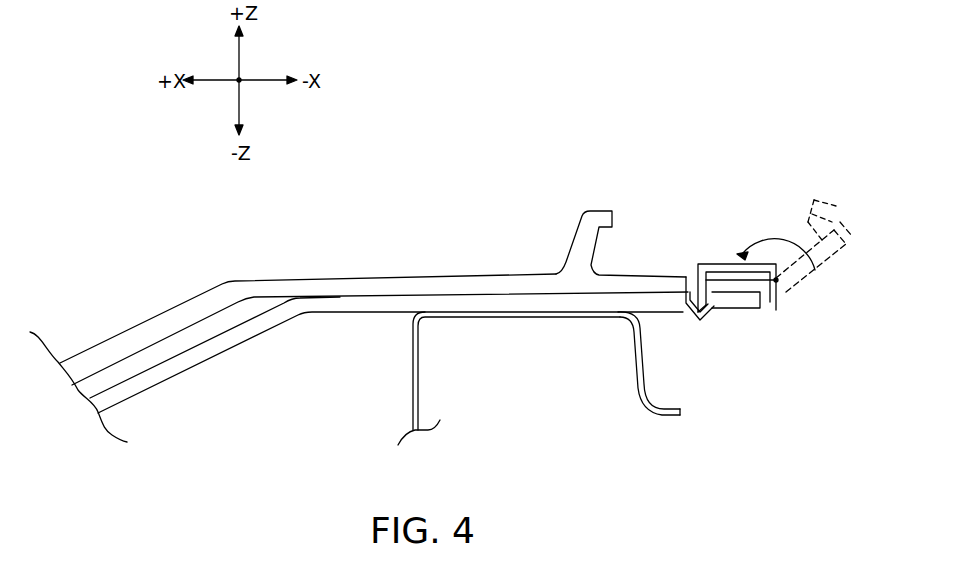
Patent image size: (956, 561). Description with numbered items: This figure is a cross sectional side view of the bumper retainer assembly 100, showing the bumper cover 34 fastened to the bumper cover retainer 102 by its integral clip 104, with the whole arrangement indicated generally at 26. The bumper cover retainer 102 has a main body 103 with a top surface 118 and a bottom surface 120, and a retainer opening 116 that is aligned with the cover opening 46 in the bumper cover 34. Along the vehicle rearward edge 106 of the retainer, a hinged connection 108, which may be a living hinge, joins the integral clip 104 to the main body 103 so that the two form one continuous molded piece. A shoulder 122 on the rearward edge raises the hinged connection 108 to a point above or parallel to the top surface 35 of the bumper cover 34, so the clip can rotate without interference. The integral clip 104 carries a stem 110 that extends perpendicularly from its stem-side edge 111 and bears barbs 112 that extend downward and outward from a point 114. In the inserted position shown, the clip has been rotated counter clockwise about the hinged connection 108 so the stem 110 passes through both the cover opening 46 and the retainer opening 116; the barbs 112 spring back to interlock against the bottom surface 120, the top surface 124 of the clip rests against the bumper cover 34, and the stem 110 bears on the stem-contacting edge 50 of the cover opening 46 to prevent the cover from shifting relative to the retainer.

The seat frame assembly 26 is at (131, 224).
The bumper cover 34 is at (198, 306).
The top surface of the bumper cover 35 is at (438, 276).
The cover opening 46 is at (684, 271).
The stem-contacting edge 50 is at (760, 293).
The bumper retainer assembly 100 is at (735, 358).
The bumper cover retainer 102 is at (374, 337).
The main body 103 is at (330, 312).
The integral clip 104 is at (822, 227).
The vehicle rearward edge 106 is at (764, 310).
The hinged connection 108 is at (779, 285).
The stem 110 is at (850, 224).
The stem-side edge 111 is at (803, 278).
The barb 112 is at (836, 204).
The point 114 is at (812, 206).
The retainer opening 116 is at (672, 322).
The top surface of the bumper cover retainer 118 is at (362, 294).
The bottom surface of the bumper cover retainer 120 is at (365, 313).
The shoulder 122 is at (756, 304).
The top surface of the integral clip 124 is at (788, 262).